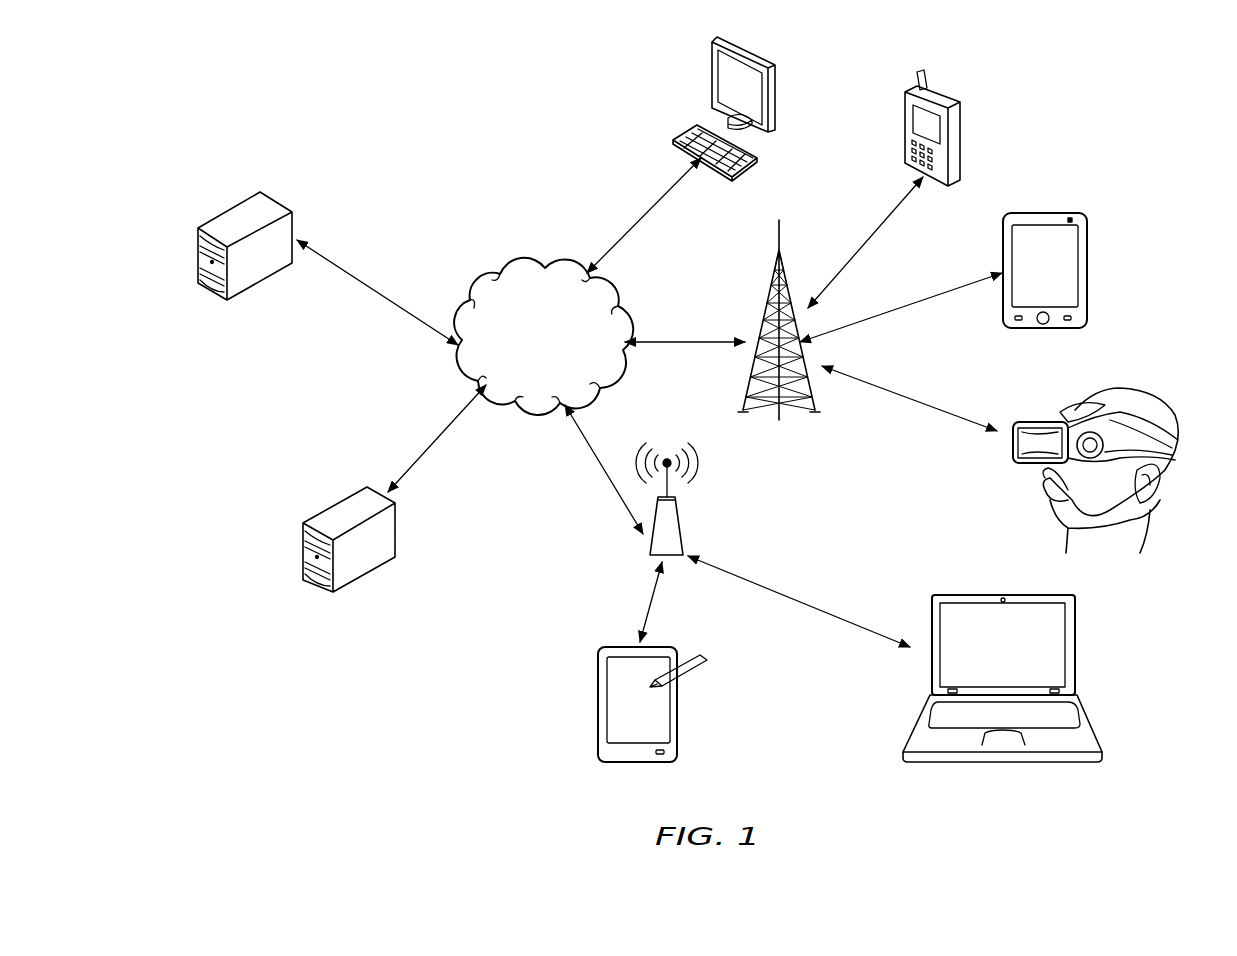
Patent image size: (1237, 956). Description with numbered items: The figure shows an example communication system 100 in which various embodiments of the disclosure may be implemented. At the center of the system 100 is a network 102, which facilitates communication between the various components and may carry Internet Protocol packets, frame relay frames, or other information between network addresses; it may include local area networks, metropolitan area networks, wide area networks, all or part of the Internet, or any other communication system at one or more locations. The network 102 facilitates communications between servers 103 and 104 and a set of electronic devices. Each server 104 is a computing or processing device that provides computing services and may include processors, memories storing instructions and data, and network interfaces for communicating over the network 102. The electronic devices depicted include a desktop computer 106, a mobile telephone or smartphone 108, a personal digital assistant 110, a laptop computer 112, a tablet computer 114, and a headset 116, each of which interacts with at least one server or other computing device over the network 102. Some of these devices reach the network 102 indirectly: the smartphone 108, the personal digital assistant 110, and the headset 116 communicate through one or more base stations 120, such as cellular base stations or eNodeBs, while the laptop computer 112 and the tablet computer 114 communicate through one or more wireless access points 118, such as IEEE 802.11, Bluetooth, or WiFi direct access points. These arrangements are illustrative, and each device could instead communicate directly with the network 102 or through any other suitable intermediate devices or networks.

The communication system 100 is at (289, 101).
The network 102 is at (471, 292).
The server 103 is at (334, 504).
The server 104 is at (229, 210).
The desktop computer 106 is at (711, 72).
The mobile telephone or smartphone 108 is at (904, 126).
The personal digital assistant (PDA) 110 is at (1003, 252).
The laptop computer 112 is at (1075, 645).
The tablet computer 114 is at (598, 706).
The headset 116 is at (1175, 437).
The wireless access point 118 is at (690, 530).
The base station 120 is at (761, 318).